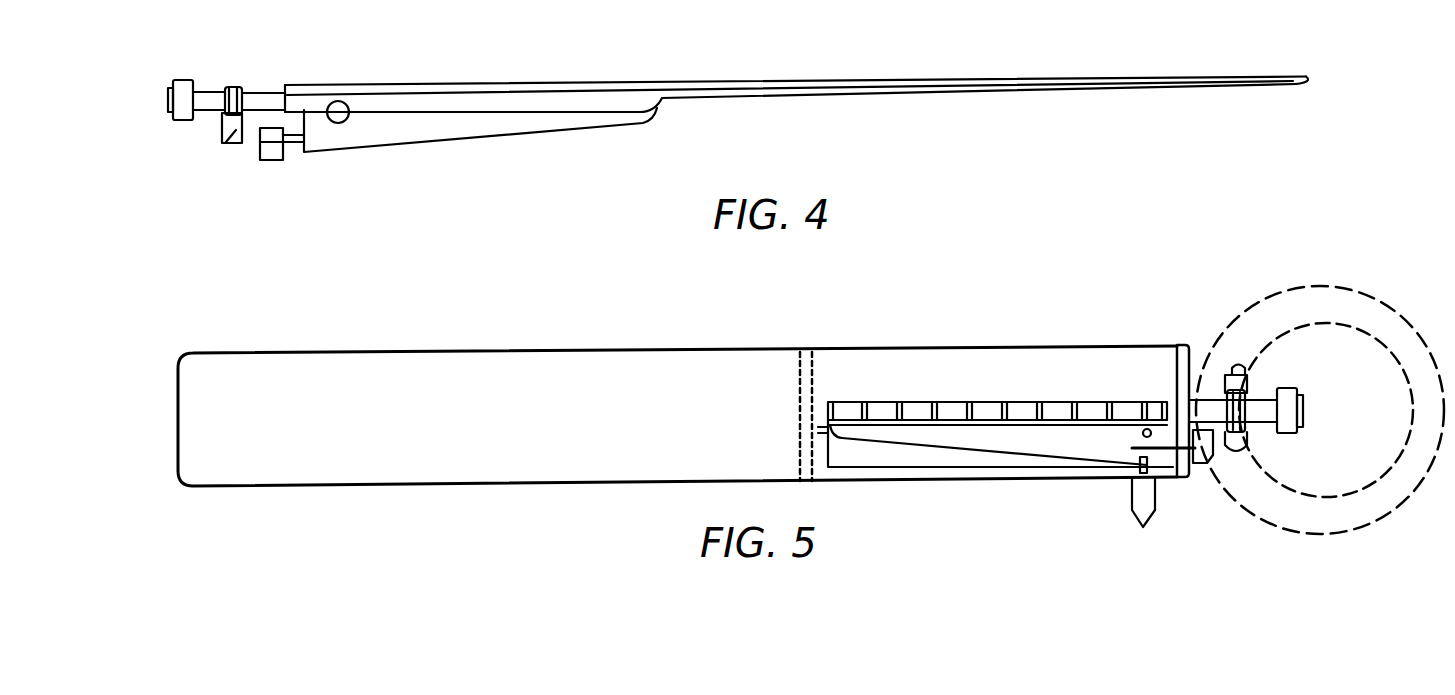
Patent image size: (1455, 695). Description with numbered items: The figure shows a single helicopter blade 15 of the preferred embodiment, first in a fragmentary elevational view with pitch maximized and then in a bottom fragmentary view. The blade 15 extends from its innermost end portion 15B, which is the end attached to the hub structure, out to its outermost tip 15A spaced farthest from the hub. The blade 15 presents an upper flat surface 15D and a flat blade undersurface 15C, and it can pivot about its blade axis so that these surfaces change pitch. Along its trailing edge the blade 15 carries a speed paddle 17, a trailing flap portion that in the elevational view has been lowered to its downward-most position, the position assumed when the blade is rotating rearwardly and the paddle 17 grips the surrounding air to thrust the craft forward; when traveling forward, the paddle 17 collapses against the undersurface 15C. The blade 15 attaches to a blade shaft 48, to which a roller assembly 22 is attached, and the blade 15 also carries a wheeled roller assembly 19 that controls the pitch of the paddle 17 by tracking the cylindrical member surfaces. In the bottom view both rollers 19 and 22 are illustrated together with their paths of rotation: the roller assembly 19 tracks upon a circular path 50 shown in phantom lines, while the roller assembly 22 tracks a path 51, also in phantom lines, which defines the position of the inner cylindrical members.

In FIG. 4, the blade 15 is at (767, 78).
In FIG. 5, the blade 15 is at (548, 433).
In FIG. 4, the outermost tip 15A is at (1338, 50).
In FIG. 5, the outermost tip 15A is at (178, 408).
In FIG. 4, the end portion 15B is at (166, 100).
In FIG. 5, the end portion 15B is at (1302, 411).
In FIG. 4, the blade undersurface 15C is at (1032, 88).
In FIG. 4, the upper flat surface 15D is at (1043, 74).
In FIG. 4, the speed paddle 17 is at (435, 130).
In FIG. 5, the speed paddle 17 is at (1055, 440).
In FIG. 4, the roller assembly 19 is at (275, 150).
In FIG. 5, the roller assembly 19 is at (1208, 465).
In FIG. 4, the roller assembly 22 is at (223, 141).
In FIG. 5, the roller assembly 22 is at (1245, 368).
In FIG. 5, the blade shaft 48 is at (1200, 413).
In FIG. 5, the circular path 50 is at (1378, 297).
In FIG. 5, the path 51 is at (1377, 338).